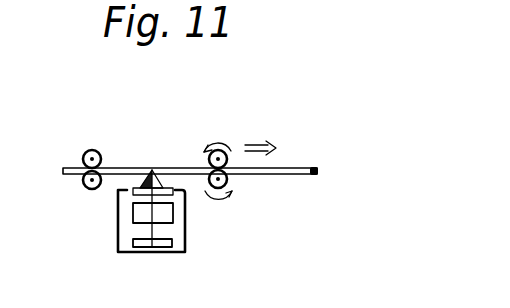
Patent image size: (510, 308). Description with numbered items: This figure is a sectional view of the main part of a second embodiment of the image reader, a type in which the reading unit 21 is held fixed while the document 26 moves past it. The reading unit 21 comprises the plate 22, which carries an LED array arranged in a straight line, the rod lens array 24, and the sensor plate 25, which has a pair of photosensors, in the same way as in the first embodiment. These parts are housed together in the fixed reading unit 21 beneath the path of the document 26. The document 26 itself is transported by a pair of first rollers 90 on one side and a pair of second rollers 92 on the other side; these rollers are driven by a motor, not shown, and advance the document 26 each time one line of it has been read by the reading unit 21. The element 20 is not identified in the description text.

The magnetic tape 20 is at (318, 172).
The reading unit 21 is at (118, 227).
The plate 22 is at (160, 243).
The rod lens array 24 is at (165, 217).
The sensor plate 25 is at (186, 193).
The document 26 is at (122, 168).
The first rollers 90 is at (85, 152).
The second rollers 92 is at (229, 151).